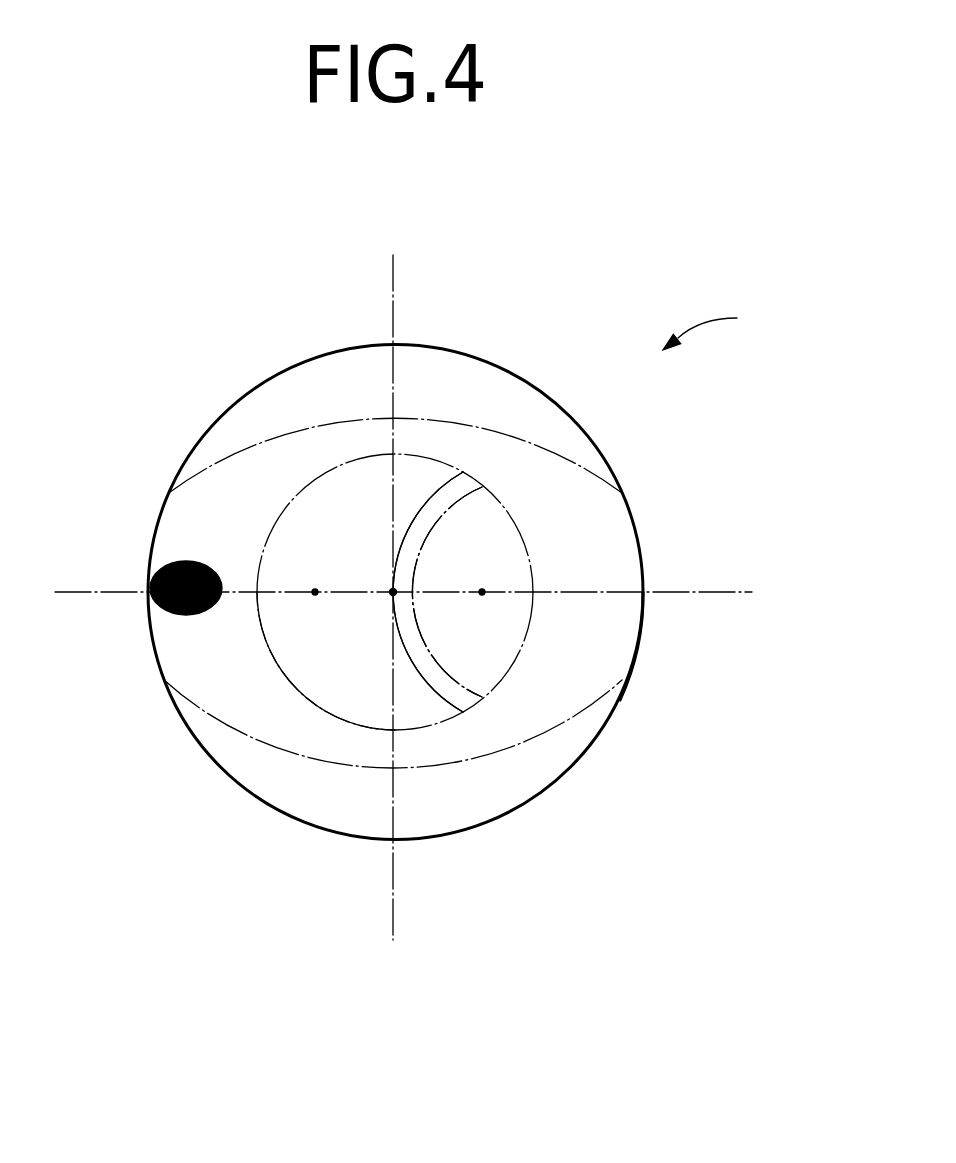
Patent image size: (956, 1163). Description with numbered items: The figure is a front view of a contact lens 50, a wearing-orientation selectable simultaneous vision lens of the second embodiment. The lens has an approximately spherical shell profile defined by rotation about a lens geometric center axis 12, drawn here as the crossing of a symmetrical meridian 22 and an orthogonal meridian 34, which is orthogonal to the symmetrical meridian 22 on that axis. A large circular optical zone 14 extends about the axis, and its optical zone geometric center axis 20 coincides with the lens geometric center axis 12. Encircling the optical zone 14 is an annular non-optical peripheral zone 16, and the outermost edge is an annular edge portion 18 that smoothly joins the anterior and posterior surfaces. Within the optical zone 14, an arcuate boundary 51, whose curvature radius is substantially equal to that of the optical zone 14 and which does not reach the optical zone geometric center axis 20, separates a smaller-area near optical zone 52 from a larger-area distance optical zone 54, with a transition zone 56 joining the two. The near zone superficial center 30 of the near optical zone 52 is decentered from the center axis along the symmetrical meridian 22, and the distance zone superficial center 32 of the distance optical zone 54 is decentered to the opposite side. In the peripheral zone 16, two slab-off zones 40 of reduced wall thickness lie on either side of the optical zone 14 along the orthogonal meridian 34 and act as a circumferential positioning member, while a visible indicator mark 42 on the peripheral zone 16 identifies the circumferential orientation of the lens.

The lens geometric center axis 12 is at (248, 481).
The optical zone geometric center axis 20 is at (393, 592).
The optical zone 14 is at (559, 519).
The peripheral zone 16 is at (630, 563).
The edge portion 18 is at (640, 630).
The symmetrical meridian 22 is at (730, 591).
The near zone superficial center 30 is at (483, 590).
The distance zone superficial center 32 is at (315, 591).
The orthogonal meridian 34 is at (398, 290).
The slab-off zones 40 is at (467, 387).
The indicator mark 42 is at (162, 567).
The contact lens 50 is at (717, 325).
The arcuate boundary 51 is at (455, 685).
The near optical zone 52 is at (477, 623).
The distance optical zone 54 is at (343, 685).
The transition zone 56 is at (433, 672).